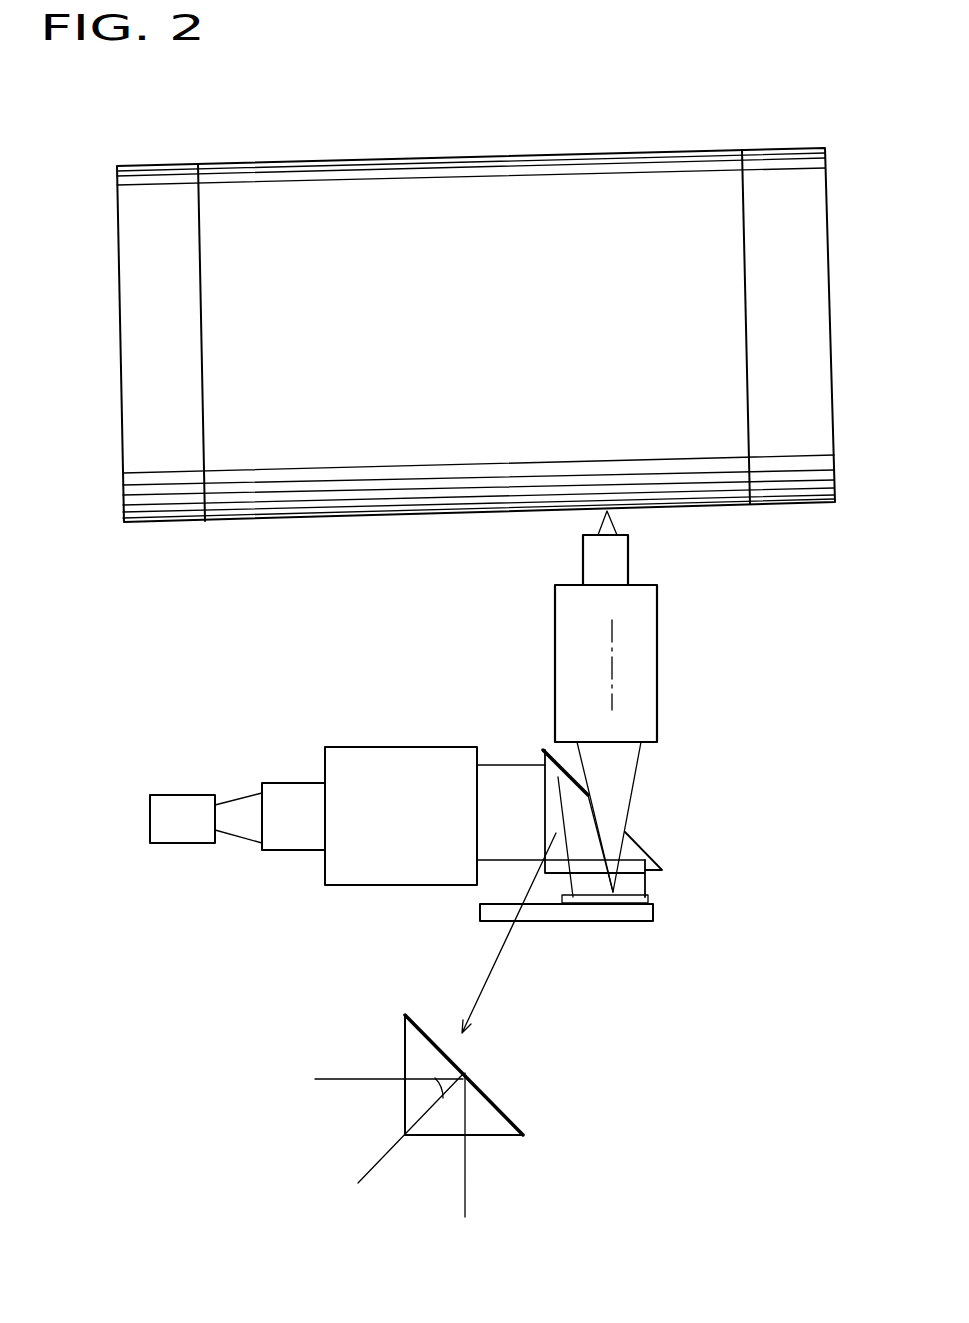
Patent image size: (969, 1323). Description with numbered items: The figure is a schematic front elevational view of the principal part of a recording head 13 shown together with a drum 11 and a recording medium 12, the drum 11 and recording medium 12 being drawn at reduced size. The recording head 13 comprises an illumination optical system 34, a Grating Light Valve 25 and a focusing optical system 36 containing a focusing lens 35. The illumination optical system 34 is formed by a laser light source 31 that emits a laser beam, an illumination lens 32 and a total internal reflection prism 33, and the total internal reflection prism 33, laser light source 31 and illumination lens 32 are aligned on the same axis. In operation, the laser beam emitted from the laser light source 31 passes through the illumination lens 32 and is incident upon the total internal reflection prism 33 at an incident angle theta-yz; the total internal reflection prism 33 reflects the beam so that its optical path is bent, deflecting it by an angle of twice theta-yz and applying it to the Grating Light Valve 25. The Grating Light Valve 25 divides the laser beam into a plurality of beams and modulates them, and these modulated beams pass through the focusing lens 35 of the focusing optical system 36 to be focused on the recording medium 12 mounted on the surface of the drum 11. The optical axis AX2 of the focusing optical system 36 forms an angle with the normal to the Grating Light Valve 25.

The drum 11 is at (812, 475).
The recording medium 12 is at (712, 488).
The recording head 13 is at (496, 864).
The Grating Light Valve 25 is at (628, 912).
The laser light source 31 is at (193, 808).
The illumination lens 32 is at (370, 765).
The total internal reflection prism 33 is at (456, 941).
The illumination optical system 34 is at (406, 907).
The focusing lens 35 is at (657, 653).
The focusing optical system 36 is at (698, 701).
The optical axis of the focusing optical system AX2 is at (612, 680).